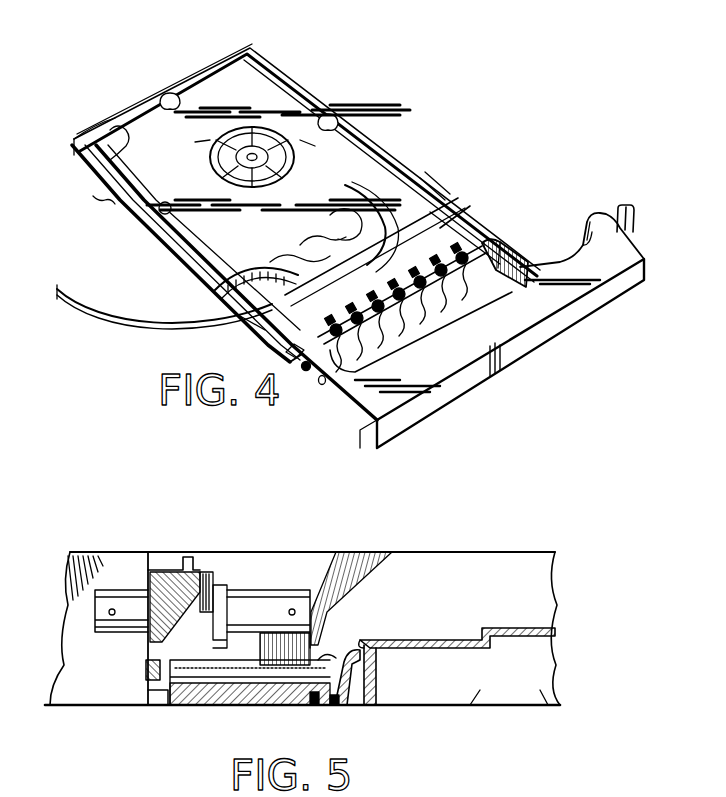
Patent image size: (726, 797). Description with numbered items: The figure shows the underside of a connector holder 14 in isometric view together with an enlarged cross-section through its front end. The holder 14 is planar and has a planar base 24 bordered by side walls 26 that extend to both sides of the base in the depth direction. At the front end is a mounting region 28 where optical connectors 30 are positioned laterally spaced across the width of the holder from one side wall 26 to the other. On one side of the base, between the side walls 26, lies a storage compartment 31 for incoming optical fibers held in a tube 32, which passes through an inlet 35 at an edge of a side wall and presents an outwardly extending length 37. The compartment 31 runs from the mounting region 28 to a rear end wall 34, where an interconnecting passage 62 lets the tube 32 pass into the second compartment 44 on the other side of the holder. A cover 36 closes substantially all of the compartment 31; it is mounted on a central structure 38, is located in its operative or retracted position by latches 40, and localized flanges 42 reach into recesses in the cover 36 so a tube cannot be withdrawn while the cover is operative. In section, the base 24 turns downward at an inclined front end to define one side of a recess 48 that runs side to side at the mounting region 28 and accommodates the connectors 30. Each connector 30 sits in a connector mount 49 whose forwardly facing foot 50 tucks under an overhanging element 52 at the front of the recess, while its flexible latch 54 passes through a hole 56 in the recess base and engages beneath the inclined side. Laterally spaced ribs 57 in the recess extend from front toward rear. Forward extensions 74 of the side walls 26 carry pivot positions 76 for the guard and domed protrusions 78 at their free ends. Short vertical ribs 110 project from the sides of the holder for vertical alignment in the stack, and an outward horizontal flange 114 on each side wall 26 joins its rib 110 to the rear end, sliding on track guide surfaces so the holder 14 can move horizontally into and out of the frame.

In FIG. 4, the holder 14 is at (302, 72).
In FIG. 5, the holder 14 is at (566, 564).
In FIG. 4, the planar base 24 is at (419, 180).
In FIG. 5, the planar base 24 is at (563, 628).
In FIG. 4, the side walls 26 is at (72, 158).
In FIG. 5, the side walls 26 is at (430, 579).
In FIG. 4, the mounting region 28 is at (456, 227).
In FIG. 4, the optical connectors 30 is at (414, 330).
In FIG. 5, the optical connectors 30 is at (121, 595).
In FIG. 4, the storage compartment 31 is at (440, 190).
In FIG. 5, the storage compartment 31 is at (543, 687).
In FIG. 4, the tube 32 is at (341, 214).
In FIG. 4, the rear end wall 34 is at (96, 124).
In FIG. 4, the inlet 35 is at (235, 316).
In FIG. 4, the cover 36 is at (187, 194).
In FIG. 4, the outwardly extending length 37 is at (98, 306).
In FIG. 4, the central structure 38 is at (302, 160).
In FIG. 4, the latches 40 is at (212, 141).
In FIG. 4, the localized flanges 42 is at (174, 90).
In FIG. 5, the second compartment 44 is at (501, 586).
In FIG. 5, the recess 48 is at (326, 709).
In FIG. 5, the connector mount 49 is at (168, 577).
In FIG. 5, the forwardly facing foot 50 is at (153, 712).
In FIG. 5, the overhanging element 52 is at (146, 673).
In FIG. 5, the flexible latch 54 is at (356, 707).
In FIG. 5, the hole 56 is at (326, 670).
In FIG. 5, the ribs 57 is at (224, 709).
In FIG. 4, the interconnecting passage 62 is at (158, 88).
In FIG. 4, the forward extensions 74 is at (477, 282).
In FIG. 4, the pivot positions 76 is at (298, 366).
In FIG. 4, the domed protrusions 78 is at (318, 386).
In FIG. 4, the short vertical ribs 110 is at (490, 227).
In FIG. 4, the outward horizontal flange 114 is at (100, 202).